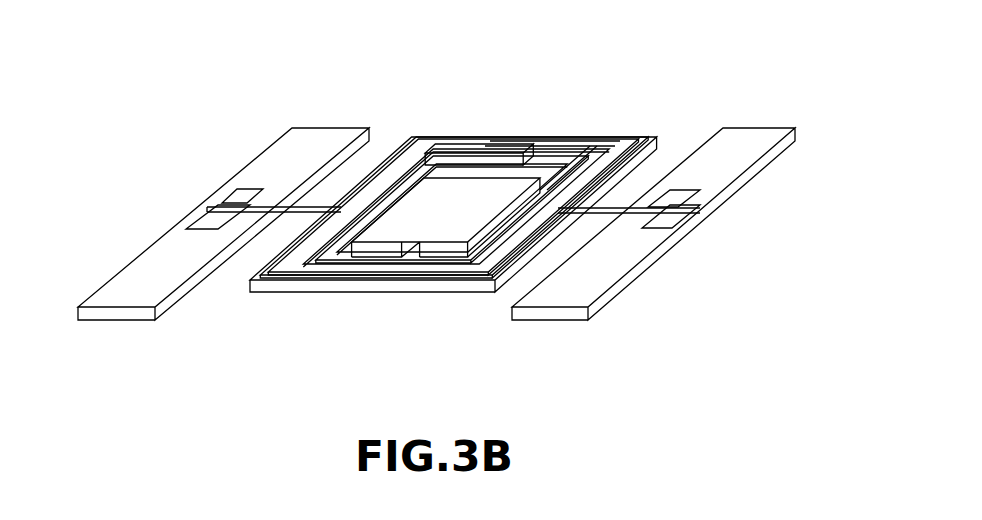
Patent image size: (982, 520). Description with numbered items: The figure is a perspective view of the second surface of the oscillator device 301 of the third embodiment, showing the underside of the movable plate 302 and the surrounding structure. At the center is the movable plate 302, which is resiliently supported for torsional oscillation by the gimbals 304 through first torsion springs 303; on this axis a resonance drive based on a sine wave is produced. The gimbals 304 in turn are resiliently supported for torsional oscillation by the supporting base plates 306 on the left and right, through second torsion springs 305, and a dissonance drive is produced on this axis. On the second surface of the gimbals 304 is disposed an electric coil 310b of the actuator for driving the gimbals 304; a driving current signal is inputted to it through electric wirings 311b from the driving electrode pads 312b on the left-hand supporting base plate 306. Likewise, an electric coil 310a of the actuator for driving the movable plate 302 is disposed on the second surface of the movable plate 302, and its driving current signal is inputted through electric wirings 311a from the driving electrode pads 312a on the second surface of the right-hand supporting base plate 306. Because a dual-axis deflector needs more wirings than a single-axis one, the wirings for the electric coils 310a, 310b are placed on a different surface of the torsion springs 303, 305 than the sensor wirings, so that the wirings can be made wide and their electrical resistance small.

The oscillator device 301 is at (398, 118).
The movable plate 302 is at (445, 215).
The first torsion springs 303 is at (530, 150).
The gimbals 304 is at (325, 283).
The second torsion springs 305 is at (277, 222).
The supporting base plates 306 is at (140, 300).
The electric coil 310a is at (542, 166).
The electric coil 310b is at (478, 137).
The electric wirings 311a is at (650, 200).
The electric wirings 311b is at (268, 188).
The driving electrode pads 312a is at (660, 215).
The driving electrode pads 312b is at (215, 212).